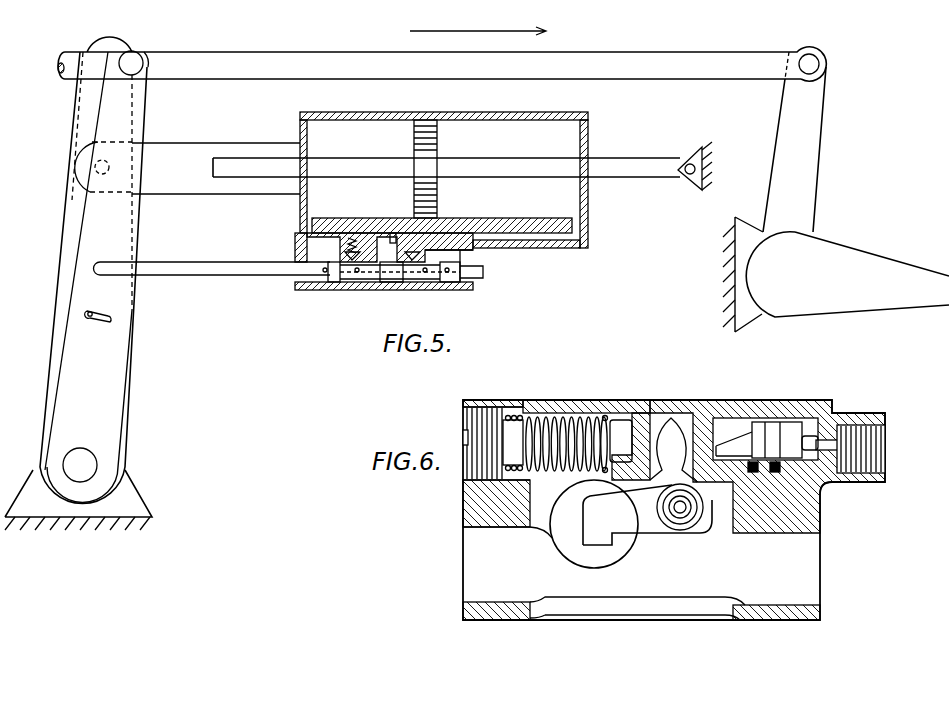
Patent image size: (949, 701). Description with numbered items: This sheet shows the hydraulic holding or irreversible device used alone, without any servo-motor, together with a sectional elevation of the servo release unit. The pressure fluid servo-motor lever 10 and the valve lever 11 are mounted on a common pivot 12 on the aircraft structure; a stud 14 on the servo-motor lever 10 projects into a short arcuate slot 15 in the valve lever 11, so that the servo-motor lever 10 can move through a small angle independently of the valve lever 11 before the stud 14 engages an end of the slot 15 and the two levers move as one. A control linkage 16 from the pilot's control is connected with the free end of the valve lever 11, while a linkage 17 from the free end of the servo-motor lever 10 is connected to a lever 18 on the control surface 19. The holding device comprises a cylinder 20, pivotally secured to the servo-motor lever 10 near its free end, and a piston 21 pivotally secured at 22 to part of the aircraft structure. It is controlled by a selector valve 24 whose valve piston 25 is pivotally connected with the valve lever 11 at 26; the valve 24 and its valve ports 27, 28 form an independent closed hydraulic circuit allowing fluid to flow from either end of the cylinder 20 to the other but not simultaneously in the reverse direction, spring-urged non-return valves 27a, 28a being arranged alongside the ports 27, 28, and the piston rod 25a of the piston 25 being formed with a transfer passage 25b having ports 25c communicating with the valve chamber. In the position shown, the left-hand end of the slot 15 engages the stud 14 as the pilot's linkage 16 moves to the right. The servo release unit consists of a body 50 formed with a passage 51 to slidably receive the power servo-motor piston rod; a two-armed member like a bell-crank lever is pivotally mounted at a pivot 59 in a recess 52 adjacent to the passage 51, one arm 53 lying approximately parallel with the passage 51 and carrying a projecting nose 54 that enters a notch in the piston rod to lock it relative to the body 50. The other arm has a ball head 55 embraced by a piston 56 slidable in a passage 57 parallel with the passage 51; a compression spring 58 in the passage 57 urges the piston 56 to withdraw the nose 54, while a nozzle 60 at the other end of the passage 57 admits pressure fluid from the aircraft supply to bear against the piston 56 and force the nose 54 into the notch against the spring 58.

In FIG. 5, the pressure fluid servo-motor lever 10 is at (72, 203).
In FIG. 5, the valve lever 11 is at (110, 393).
In FIG. 5, the common pivot 12 is at (82, 457).
In FIG. 5, the stud 14 is at (88, 313).
In FIG. 5, the arcuate slot 15 is at (112, 320).
In FIG. 5, the control linkage 16 is at (76, 72).
In FIG. 5, the linkage 17 is at (192, 65).
In FIG. 5, the lever 18 is at (793, 105).
In FIG. 5, the control surface 19 is at (872, 265).
In FIG. 5, the cylinder 20 is at (586, 195).
In FIG. 5, the piston 21 is at (437, 196).
In FIG. 5, the pivot 22 is at (681, 170).
In FIG. 5, the selector valve 24 is at (326, 299).
In FIG. 5, the valve piston 25 is at (392, 283).
In FIG. 5, the piston rod 25a is at (176, 276).
In FIG. 5, the transfer passage 25b is at (428, 282).
In FIG. 5, the ports 25c is at (440, 272).
In FIG. 5, the pivotal connection 26 is at (100, 266).
In FIG. 5, the valve port 27 is at (368, 250).
In FIG. 5, the spring-urged non-return valve 27a is at (330, 245).
In FIG. 5, the valve port 28 is at (393, 250).
In FIG. 5, the spring-urged non-return valve 28a is at (428, 252).
In FIG. 6, the body 50 is at (805, 505).
In FIG. 6, the passage 51 is at (800, 557).
In FIG. 6, the recess 52 is at (713, 513).
In FIG. 6, the arm 53 is at (632, 512).
In FIG. 6, the projecting nose 54 is at (598, 533).
In FIG. 6, the ball head 55 is at (670, 432).
In FIG. 6, the piston 56 is at (698, 440).
In FIG. 6, the passage 57 is at (618, 415).
In FIG. 6, the compression spring 58 is at (553, 415).
In FIG. 6, the pivot 59 is at (680, 510).
In FIG. 6, the nozzle 60 is at (862, 425).